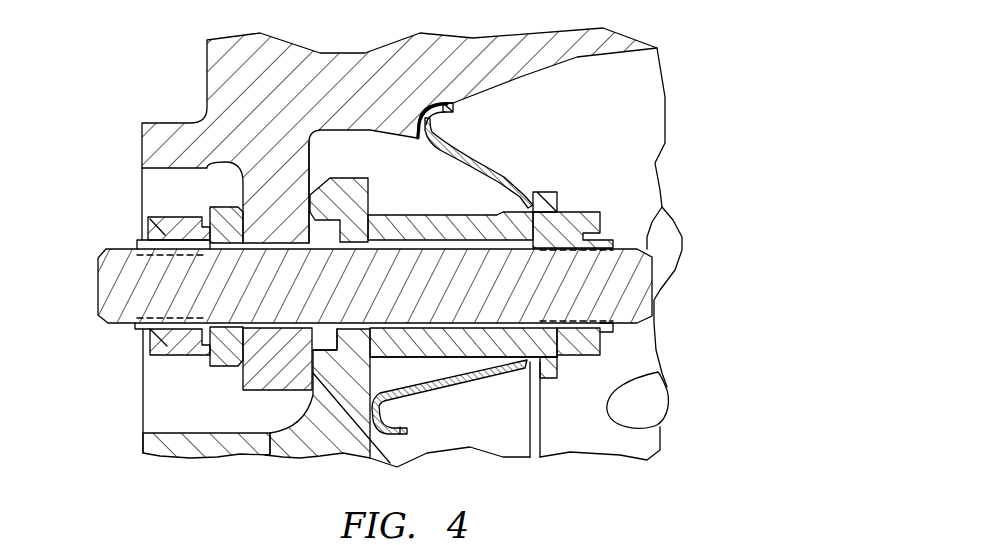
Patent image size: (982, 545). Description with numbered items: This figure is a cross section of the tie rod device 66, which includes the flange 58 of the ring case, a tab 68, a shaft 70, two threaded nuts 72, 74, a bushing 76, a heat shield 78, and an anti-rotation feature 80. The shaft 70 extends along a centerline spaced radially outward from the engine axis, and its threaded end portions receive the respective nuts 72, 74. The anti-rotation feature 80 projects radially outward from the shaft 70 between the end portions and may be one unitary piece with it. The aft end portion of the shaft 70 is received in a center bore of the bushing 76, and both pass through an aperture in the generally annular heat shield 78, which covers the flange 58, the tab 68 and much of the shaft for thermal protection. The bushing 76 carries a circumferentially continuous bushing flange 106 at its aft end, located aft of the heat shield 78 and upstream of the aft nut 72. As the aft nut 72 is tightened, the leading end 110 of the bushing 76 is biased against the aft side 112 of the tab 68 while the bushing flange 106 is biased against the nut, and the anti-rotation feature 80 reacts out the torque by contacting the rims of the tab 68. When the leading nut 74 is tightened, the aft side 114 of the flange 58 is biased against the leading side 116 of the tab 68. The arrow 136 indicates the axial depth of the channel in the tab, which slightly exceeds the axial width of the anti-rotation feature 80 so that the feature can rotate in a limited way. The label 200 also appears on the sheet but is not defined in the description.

The flange 58 is at (270, 399).
The tie rod device 66 is at (690, 149).
The tab 68 is at (318, 420).
The shaft 70 is at (458, 332).
The aft nut 72 is at (608, 366).
The leading nut 74 is at (133, 340).
The bushing 76 is at (479, 209).
The heat shield 78 is at (496, 390).
The anti-rotation feature 80 is at (372, 361).
The bushing flange 106 is at (540, 192).
The leading end of bushing 110 is at (350, 225).
The aft side of tab 112 is at (352, 198).
The aft side of flange 114 is at (317, 344).
The leading side of tab 116 is at (307, 370).
The arrow 136 is at (306, 198).
The stray label 200 is at (750, 544).